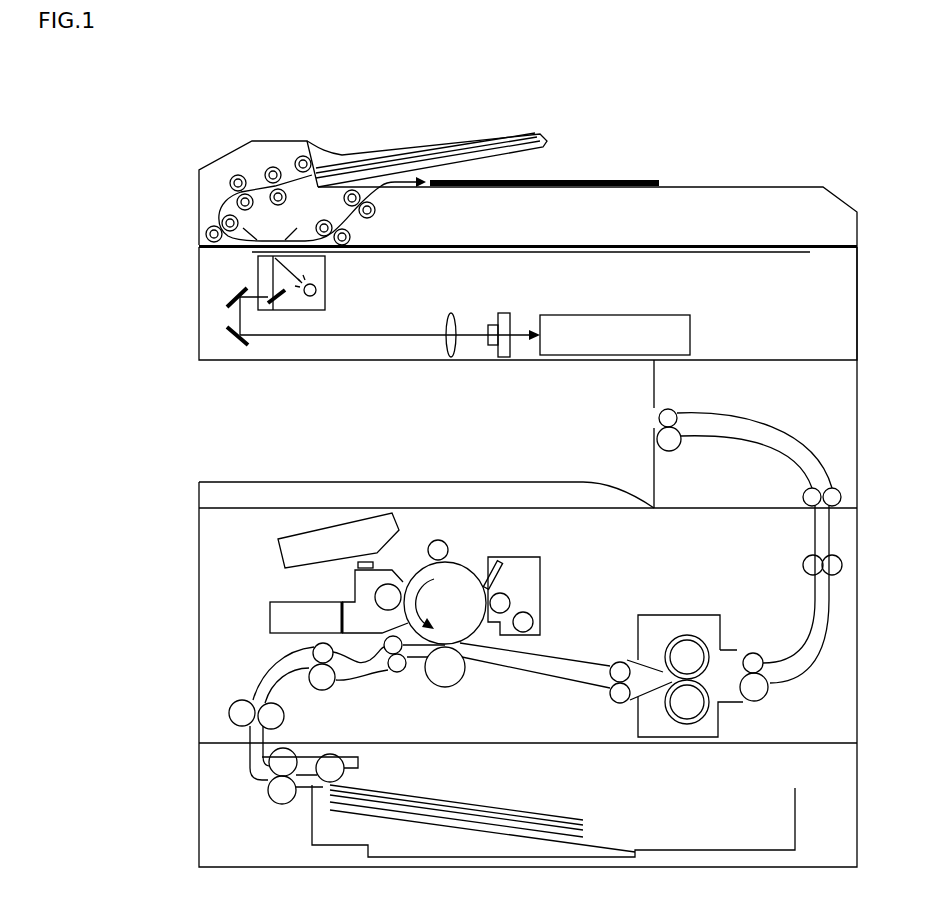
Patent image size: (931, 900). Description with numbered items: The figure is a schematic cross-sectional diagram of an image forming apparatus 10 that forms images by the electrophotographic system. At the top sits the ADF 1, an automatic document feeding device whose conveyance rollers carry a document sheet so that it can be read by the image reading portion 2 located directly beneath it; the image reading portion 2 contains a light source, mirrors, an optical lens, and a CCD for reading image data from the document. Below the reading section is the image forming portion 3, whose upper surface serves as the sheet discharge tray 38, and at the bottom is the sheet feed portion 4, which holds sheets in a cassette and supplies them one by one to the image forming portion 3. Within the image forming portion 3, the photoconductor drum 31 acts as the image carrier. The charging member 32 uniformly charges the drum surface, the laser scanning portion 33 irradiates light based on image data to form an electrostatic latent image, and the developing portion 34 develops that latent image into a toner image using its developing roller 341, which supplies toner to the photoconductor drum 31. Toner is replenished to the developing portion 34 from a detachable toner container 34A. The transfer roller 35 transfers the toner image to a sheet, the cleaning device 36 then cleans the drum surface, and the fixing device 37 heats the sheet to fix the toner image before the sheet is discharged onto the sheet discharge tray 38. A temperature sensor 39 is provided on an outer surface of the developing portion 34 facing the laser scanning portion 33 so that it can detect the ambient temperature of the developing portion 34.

The image forming apparatus 10 is at (203, 129).
The ADF 1 is at (199, 190).
The image reading portion 2 is at (199, 318).
The image forming portion 3 is at (220, 532).
The sheet feed portion 4 is at (199, 806).
The photoconductor drum 31 is at (458, 564).
The charging member 32 is at (438, 540).
The laser scanning portion 33 is at (277, 558).
The developing portion 34 is at (355, 582).
The toner container 34A is at (268, 628).
The developing roller 341 is at (380, 609).
The transfer roller 35 is at (444, 688).
The cleaning device 36 is at (517, 553).
The fixing device 37 is at (687, 612).
The sheet discharge tray 38 is at (550, 478).
The temperature sensor 39 is at (376, 563).